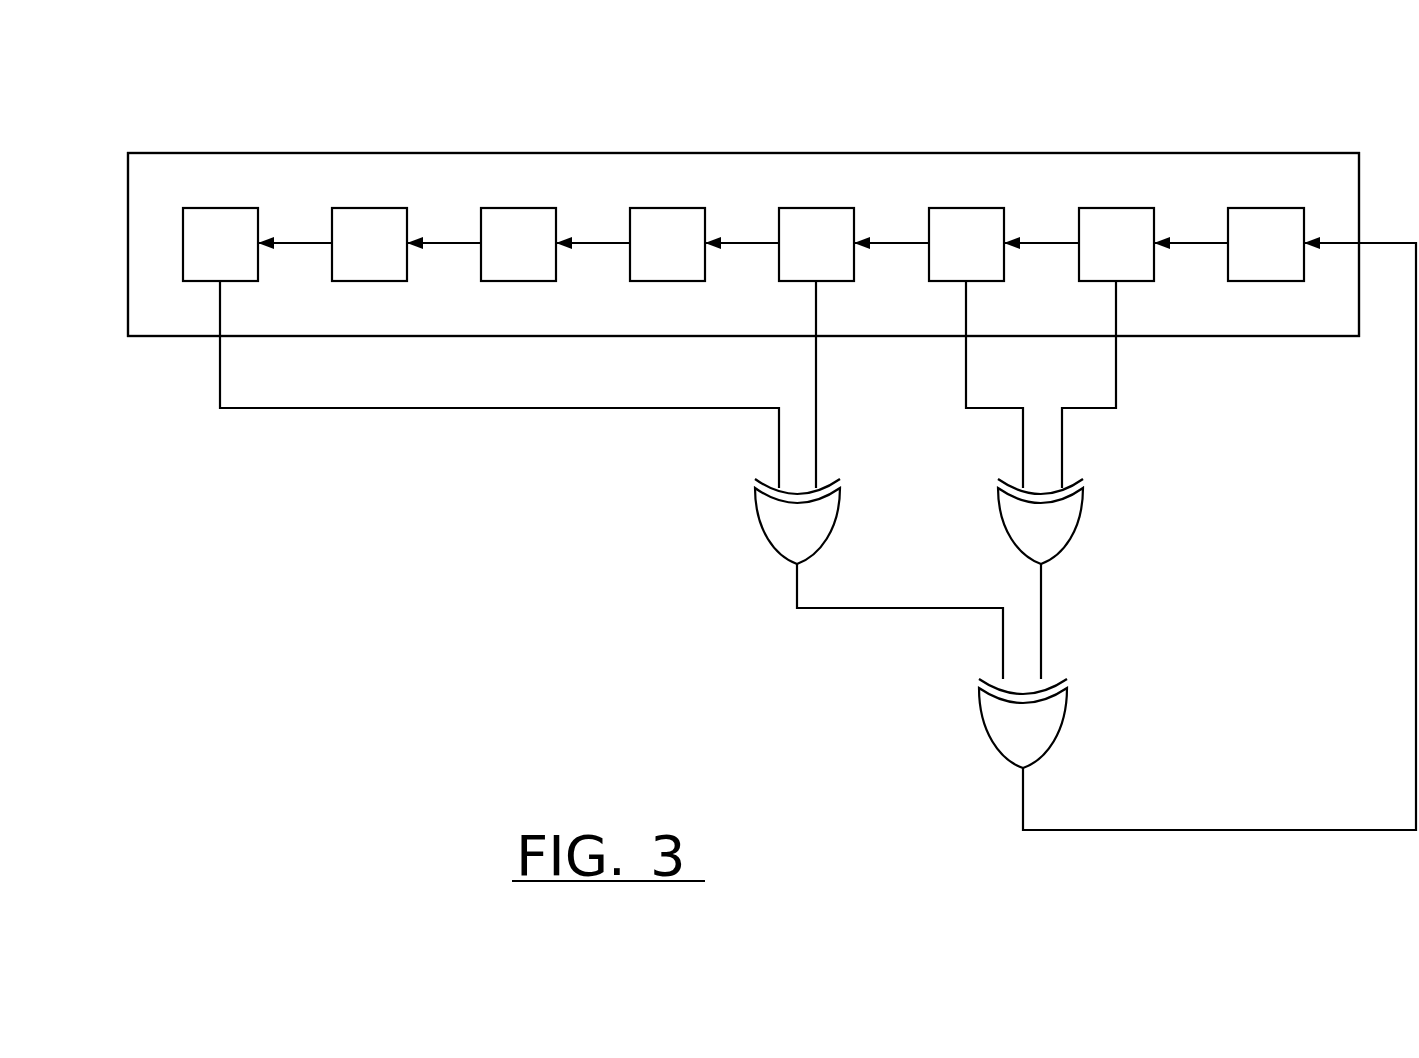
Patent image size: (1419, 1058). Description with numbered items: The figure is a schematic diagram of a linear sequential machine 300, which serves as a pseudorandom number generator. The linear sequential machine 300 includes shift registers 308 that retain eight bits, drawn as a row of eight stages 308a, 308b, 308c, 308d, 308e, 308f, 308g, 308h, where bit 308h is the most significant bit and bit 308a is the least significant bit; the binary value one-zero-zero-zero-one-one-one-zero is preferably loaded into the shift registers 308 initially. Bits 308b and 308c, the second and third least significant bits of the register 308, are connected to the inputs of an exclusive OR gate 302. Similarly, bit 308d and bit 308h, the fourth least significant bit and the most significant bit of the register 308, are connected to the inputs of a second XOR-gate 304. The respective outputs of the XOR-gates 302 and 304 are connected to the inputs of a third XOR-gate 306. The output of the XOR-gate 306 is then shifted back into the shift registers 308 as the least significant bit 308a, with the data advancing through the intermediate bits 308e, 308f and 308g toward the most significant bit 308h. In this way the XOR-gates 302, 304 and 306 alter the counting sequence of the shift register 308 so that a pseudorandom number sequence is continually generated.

The linear sequential machine 300 is at (184, 128).
The shift registers 308 is at (113, 248).
The least significant bit 308a is at (1260, 243).
The second least significant bit 308b is at (1110, 243).
The third least significant bit 308c is at (961, 243).
The fourth least significant bit 308d is at (812, 243).
The bit of shift registers 308e is at (663, 243).
The bit of shift registers 308f is at (514, 243).
The bit of shift registers 308g is at (365, 243).
The most significant bit 308h is at (216, 243).
The exclusive OR gate 302 is at (1040, 517).
The exclusive OR gate 304 is at (795, 517).
The third exclusive OR gate 306 is at (1022, 738).